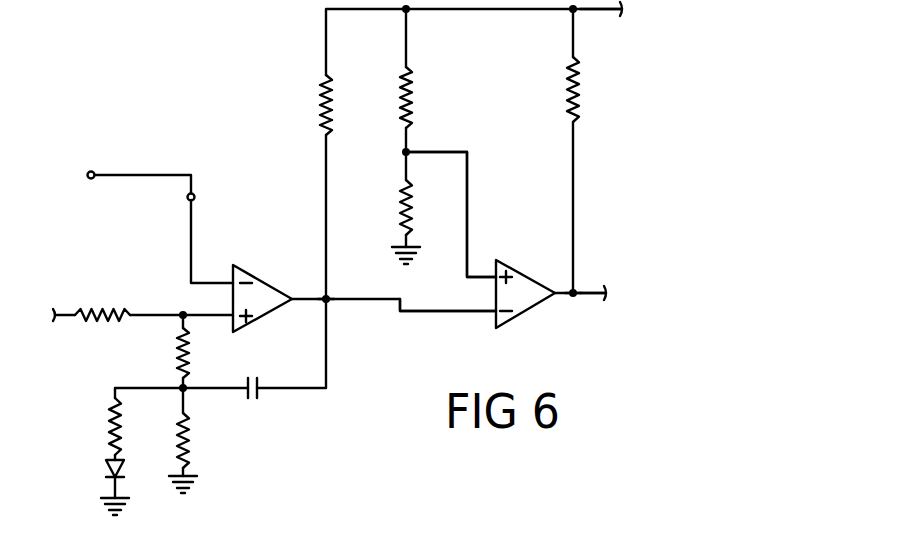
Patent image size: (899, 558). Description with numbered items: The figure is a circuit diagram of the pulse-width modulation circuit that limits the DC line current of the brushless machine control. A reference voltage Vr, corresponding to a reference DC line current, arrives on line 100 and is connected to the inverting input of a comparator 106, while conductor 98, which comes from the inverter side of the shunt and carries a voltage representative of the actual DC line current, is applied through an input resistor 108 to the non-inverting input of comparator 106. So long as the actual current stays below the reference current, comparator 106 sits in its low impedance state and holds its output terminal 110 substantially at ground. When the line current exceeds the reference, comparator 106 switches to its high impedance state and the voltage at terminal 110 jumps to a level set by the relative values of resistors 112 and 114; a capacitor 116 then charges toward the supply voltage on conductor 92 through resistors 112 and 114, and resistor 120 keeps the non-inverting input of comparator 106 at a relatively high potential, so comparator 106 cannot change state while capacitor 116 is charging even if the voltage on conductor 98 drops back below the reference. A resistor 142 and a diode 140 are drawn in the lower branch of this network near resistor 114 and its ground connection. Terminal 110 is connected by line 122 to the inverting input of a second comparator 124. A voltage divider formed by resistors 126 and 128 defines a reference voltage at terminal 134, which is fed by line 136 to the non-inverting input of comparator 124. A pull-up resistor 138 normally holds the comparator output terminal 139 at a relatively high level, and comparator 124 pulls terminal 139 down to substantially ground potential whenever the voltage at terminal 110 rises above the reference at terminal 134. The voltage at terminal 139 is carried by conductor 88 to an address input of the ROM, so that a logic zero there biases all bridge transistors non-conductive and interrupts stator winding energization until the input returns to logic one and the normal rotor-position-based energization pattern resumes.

The conductor 88 is at (595, 297).
The conductor 92 is at (585, 10).
The conductor 98 is at (67, 320).
The line 100 is at (152, 174).
The comparator 106 is at (257, 280).
The input resistor 108 is at (100, 322).
The output terminal 110 is at (330, 297).
The resistor 112 is at (333, 104).
The resistor 114 is at (192, 428).
The capacitor 116 is at (262, 393).
The resistor 120 is at (193, 356).
The line 122 is at (410, 313).
The comparator 124 is at (526, 268).
The resistor 126 is at (408, 92).
The resistor 128 is at (405, 196).
The terminal 134 is at (408, 150).
The line 136 is at (468, 165).
The pull-up resistor 138 is at (585, 96).
The comparator output terminal 139 is at (573, 300).
The diode 140 is at (105, 470).
The resistor 142 is at (110, 413).